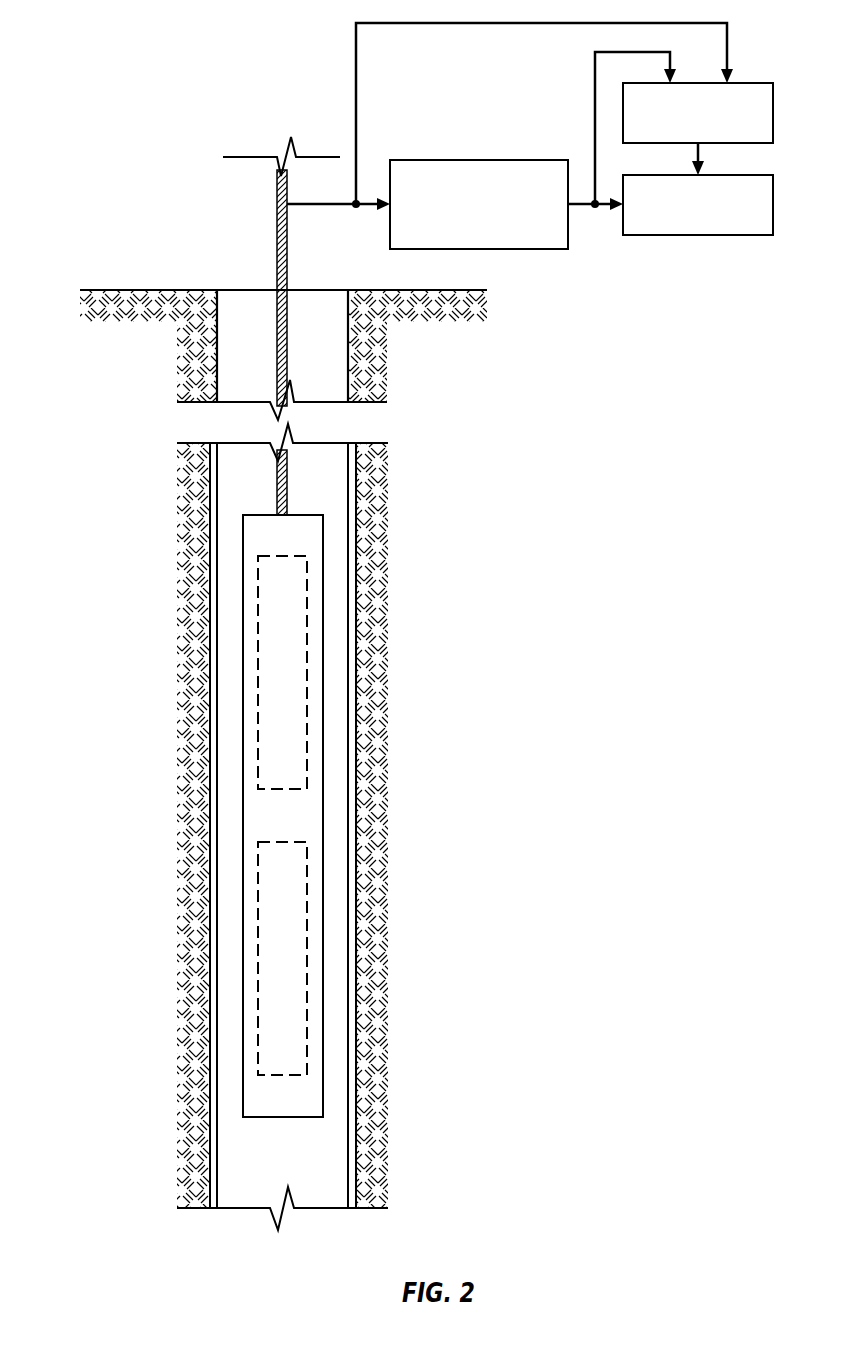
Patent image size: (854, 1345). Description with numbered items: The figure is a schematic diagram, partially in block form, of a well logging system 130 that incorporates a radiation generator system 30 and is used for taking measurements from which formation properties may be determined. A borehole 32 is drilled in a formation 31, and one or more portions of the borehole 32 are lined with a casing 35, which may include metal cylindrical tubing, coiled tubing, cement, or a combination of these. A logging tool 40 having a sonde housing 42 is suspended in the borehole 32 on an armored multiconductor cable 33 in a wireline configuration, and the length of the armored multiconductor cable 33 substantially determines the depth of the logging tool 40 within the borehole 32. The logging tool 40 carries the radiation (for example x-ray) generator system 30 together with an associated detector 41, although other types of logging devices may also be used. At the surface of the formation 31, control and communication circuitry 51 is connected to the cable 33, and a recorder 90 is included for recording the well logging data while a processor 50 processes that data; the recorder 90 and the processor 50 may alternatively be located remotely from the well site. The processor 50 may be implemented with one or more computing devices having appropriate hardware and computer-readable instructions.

The well logging system 130 is at (175, 38).
The control and communication circuitry 51 is at (480, 159).
The recorder 90 is at (757, 82).
The processor 50 is at (757, 174).
The armored multiconductor cable 33 is at (275, 253).
The borehole 32 is at (316, 300).
The formation 31 is at (372, 350).
The logging tool 40 is at (333, 500).
The detector 41 is at (312, 672).
The sonde housing 42 is at (323, 815).
The radiation generator system 30 is at (312, 957).
The casing 35 is at (352, 1085).